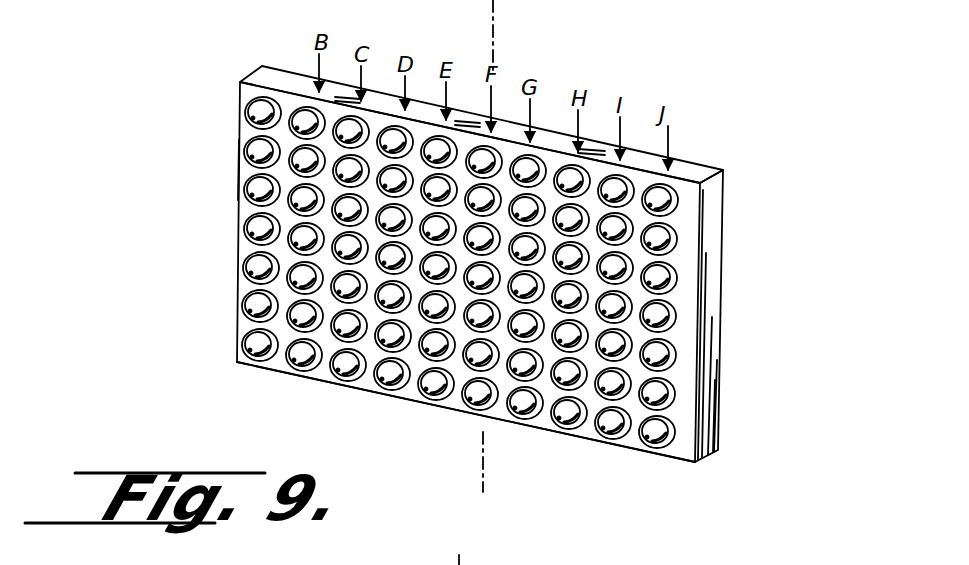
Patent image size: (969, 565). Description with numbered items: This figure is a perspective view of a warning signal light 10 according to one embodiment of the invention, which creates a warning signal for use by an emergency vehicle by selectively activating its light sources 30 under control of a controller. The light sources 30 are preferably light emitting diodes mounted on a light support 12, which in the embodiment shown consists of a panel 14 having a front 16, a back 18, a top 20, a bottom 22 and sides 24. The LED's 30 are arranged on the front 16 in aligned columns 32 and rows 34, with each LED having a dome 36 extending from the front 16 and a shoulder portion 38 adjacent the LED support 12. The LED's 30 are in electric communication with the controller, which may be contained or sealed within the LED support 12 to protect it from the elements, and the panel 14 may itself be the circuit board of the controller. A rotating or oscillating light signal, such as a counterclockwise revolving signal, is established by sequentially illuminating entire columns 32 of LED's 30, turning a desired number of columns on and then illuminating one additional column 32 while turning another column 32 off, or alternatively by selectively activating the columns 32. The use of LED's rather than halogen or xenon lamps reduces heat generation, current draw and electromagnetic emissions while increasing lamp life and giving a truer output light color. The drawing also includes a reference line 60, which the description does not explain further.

The warning signal light 10 is at (375, 413).
The light support 12 is at (718, 422).
The panel 14 is at (778, 416).
The front 16 is at (687, 442).
The back 18 is at (716, 403).
The top 20 is at (707, 163).
The bottom 22 is at (264, 367).
The sides 24 is at (237, 273).
The light sources 30 is at (522, 408).
The columns 32 is at (272, 81).
The rows 34 is at (221, 180).
The dome 36 is at (653, 316).
The shoulder portion 38 is at (675, 242).
The centerline axis 60 is at (493, 20).